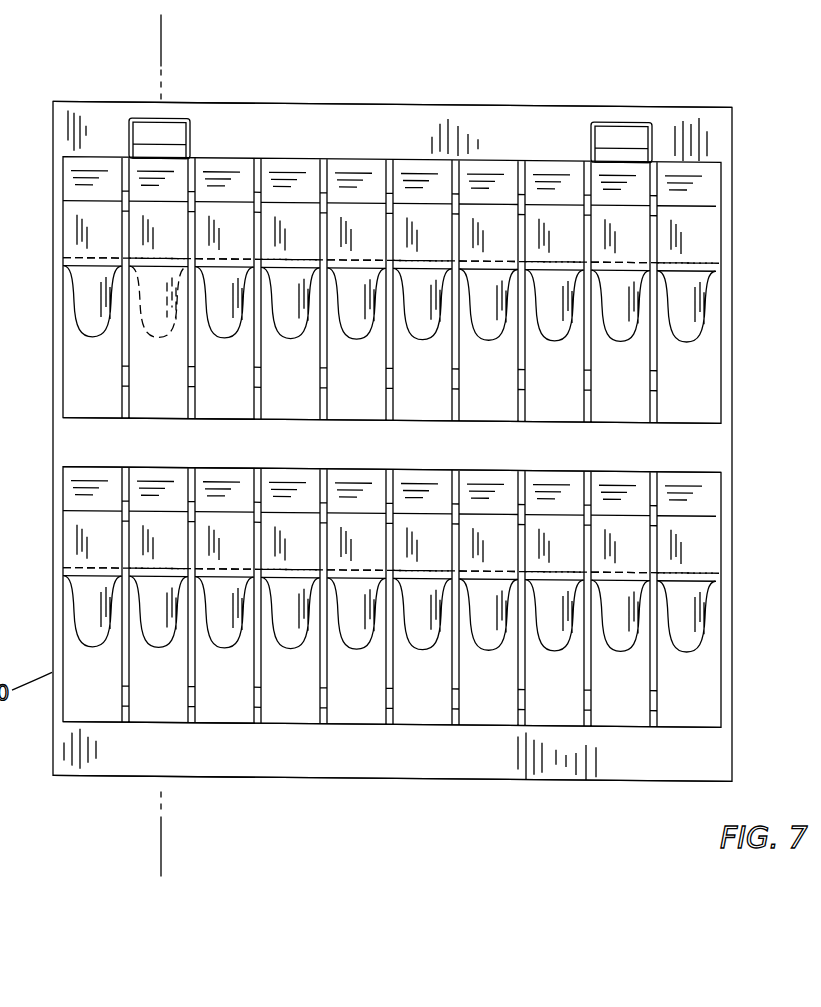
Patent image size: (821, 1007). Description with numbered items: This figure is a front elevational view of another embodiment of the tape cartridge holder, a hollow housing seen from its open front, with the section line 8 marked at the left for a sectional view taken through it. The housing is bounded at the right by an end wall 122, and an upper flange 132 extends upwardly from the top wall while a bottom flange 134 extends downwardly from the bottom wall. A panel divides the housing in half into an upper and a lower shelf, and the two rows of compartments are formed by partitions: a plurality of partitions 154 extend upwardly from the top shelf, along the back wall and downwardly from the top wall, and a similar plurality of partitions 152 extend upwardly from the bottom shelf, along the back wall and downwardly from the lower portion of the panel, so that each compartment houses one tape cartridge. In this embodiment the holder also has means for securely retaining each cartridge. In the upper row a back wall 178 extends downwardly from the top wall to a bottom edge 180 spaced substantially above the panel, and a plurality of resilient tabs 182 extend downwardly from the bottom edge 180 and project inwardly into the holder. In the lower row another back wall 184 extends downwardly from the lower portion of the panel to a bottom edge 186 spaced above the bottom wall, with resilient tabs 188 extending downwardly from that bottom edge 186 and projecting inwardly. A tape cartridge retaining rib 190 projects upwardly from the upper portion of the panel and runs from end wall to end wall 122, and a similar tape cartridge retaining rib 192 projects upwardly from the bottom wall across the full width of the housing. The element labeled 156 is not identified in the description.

The section line 8- 8 is at (150, 860).
The end wall 122 is at (732, 662).
The upper flange 132 is at (385, 120).
The bottom flange 134 is at (420, 762).
The partitions 152 is at (321, 706).
The partitions 154 is at (321, 396).
The removable carrier frame 156 is at (168, 142).
The back wall 178 is at (700, 237).
The bottom edge 180 is at (700, 252).
The resilient tabs 182 is at (96, 334).
The back wall 184 is at (700, 539).
The bottom edge 186 is at (700, 565).
The resilient tabs 188 is at (96, 645).
The tape cartridge retaining rib 190 is at (695, 417).
The tape cartridge retaining rib 192 is at (705, 730).